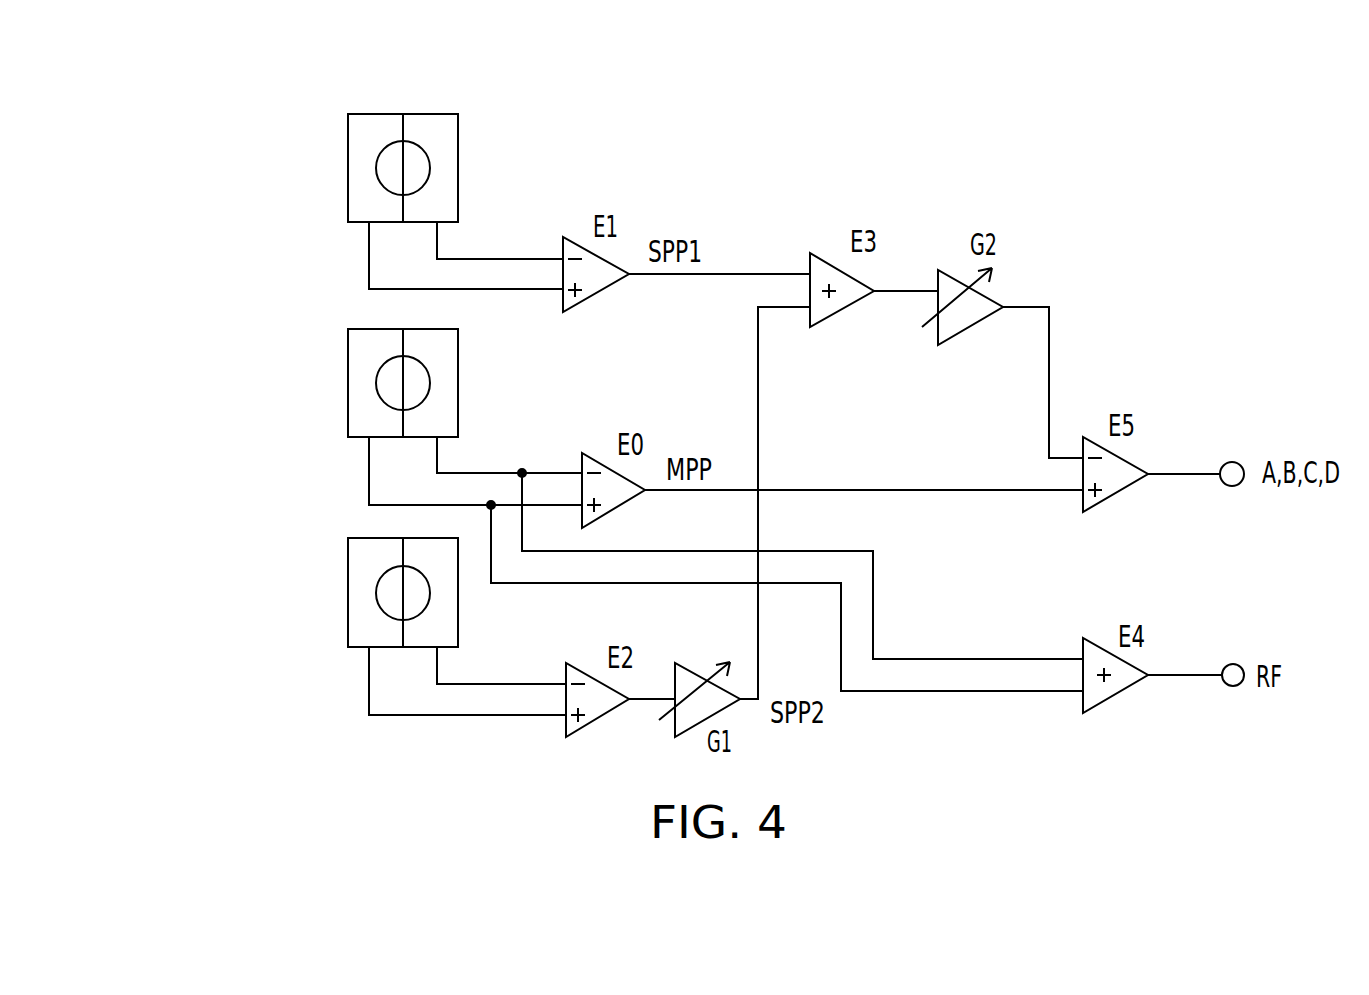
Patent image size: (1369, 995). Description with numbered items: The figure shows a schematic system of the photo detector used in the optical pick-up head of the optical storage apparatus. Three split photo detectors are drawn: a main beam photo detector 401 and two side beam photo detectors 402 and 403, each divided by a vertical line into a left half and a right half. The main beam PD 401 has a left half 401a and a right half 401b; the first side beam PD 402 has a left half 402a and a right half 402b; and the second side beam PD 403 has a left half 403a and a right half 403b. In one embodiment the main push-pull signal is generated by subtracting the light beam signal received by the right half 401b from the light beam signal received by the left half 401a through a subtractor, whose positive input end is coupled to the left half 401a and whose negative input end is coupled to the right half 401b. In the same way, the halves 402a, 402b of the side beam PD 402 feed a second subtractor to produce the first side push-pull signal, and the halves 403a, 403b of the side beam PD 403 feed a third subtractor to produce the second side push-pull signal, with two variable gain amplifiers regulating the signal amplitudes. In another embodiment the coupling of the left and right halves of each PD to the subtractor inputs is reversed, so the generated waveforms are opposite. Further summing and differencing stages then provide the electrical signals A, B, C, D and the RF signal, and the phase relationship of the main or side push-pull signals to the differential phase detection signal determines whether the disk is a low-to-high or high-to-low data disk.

The main beam photo detector 401 is at (353, 406).
The left half of main beam photo detector 401a is at (348, 427).
The right half of main beam photo detector 401b is at (458, 414).
The side beam photo detector 402 is at (297, 123).
The left half of side beam photo detector 402a is at (378, 112).
The right half of side beam photo detector 402b is at (430, 112).
The side beam photo detector 403 is at (346, 624).
The left half of side beam photo detector 403a is at (348, 632).
The right half of side beam photo detector 403b is at (458, 618).